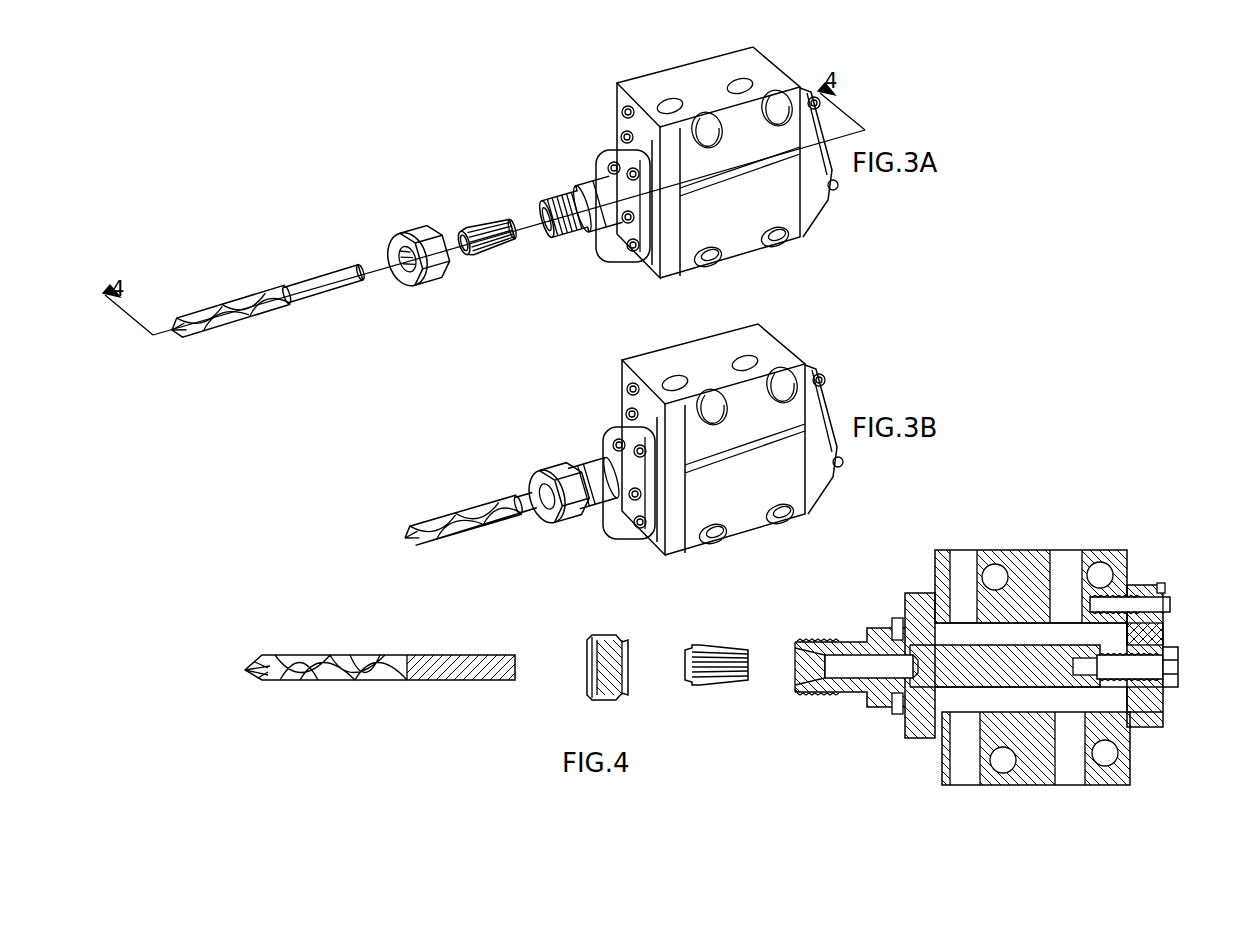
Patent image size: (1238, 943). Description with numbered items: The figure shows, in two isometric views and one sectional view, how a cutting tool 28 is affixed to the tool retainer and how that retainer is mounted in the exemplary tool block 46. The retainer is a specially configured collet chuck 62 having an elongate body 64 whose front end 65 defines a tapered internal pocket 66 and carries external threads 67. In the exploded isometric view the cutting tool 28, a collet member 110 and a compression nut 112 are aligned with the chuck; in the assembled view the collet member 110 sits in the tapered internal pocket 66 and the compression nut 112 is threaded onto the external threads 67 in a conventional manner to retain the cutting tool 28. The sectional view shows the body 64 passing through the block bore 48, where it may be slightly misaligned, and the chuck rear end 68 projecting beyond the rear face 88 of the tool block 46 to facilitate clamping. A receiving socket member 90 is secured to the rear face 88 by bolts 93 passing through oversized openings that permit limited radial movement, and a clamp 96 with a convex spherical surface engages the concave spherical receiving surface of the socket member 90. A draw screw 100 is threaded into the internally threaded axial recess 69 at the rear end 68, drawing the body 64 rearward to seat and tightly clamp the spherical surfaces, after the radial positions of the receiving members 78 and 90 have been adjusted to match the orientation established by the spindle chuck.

In FIG. 3A, the cutting tool 28 is at (232, 322).
In FIG. 3B, the cutting tool 28 is at (417, 549).
In FIG. 4, the cutting tool 28 is at (437, 680).
In FIG. 3A, the tool block 46 is at (620, 81).
In FIG. 3B, the tool block 46 is at (783, 354).
In FIG. 4, the tool block 46 is at (1025, 550).
In FIG. 4, the block bore 48 is at (950, 704).
In FIG. 3A, the collet chuck 62 is at (571, 180).
In FIG. 3B, the collet chuck 62 is at (590, 464).
In FIG. 4, the collet chuck 62 is at (838, 695).
In FIG. 4, the elongate body 64 is at (957, 719).
In FIG. 4, the front end 65 is at (795, 692).
In FIG. 4, the tapered internal pocket 66 is at (795, 655).
In FIG. 4, the external threads 67 is at (817, 642).
In FIG. 4, the rear end 68 is at (1133, 732).
In FIG. 4, the internally threaded axial recess 69 is at (1174, 689).
In FIG. 3A, the receiving member 78 is at (657, 250).
In FIG. 3B, the receiving member 78 is at (663, 522).
In FIG. 4, the receiving member 78 is at (920, 595).
In FIG. 4, the rear face 88 is at (1130, 762).
In FIG. 3A, the receiving socket member 90 is at (819, 207).
In FIG. 3B, the receiving socket member 90 is at (817, 409).
In FIG. 4, the receiving socket member 90 is at (1140, 587).
In FIG. 4, the bolts 93 is at (1163, 589).
In FIG. 4, the clamp 96 is at (1172, 641).
In FIG. 4, the draw screw 100 is at (1180, 665).
In FIG. 3A, the collet member 110 is at (487, 255).
In FIG. 4, the collet member 110 is at (710, 687).
In FIG. 3A, the compression nut 112 is at (412, 284).
In FIG. 3B, the compression nut 112 is at (547, 535).
In FIG. 4, the compression nut 112 is at (587, 689).